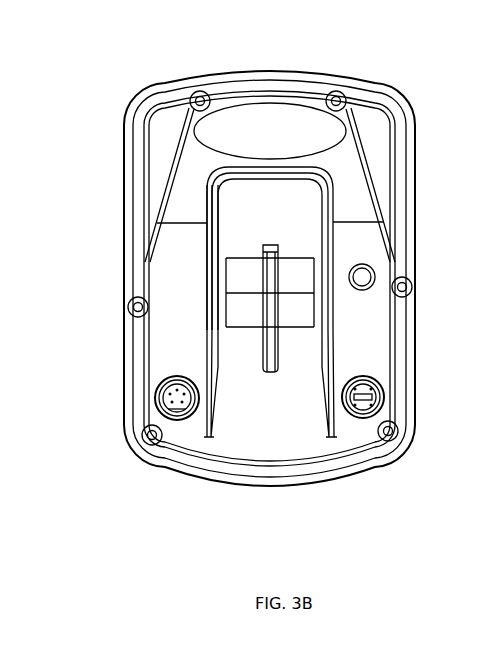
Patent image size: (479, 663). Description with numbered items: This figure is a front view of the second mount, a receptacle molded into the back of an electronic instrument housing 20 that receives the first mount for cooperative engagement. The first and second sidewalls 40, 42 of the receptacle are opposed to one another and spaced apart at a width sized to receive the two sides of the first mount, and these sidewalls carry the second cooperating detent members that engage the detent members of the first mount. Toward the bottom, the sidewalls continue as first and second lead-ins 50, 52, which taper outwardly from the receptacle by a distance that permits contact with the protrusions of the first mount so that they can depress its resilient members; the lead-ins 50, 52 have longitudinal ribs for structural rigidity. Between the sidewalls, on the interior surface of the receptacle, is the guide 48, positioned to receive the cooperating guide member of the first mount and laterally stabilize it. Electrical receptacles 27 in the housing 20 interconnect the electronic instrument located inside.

The housing 20 is at (382, 100).
The electrical receptacles 27 is at (147, 445).
The first sidewall 40 is at (318, 222).
The second sidewall 42 is at (220, 232).
The guide 48 is at (272, 375).
The first lead-in 50 is at (320, 413).
The second lead-in 52 is at (220, 413).